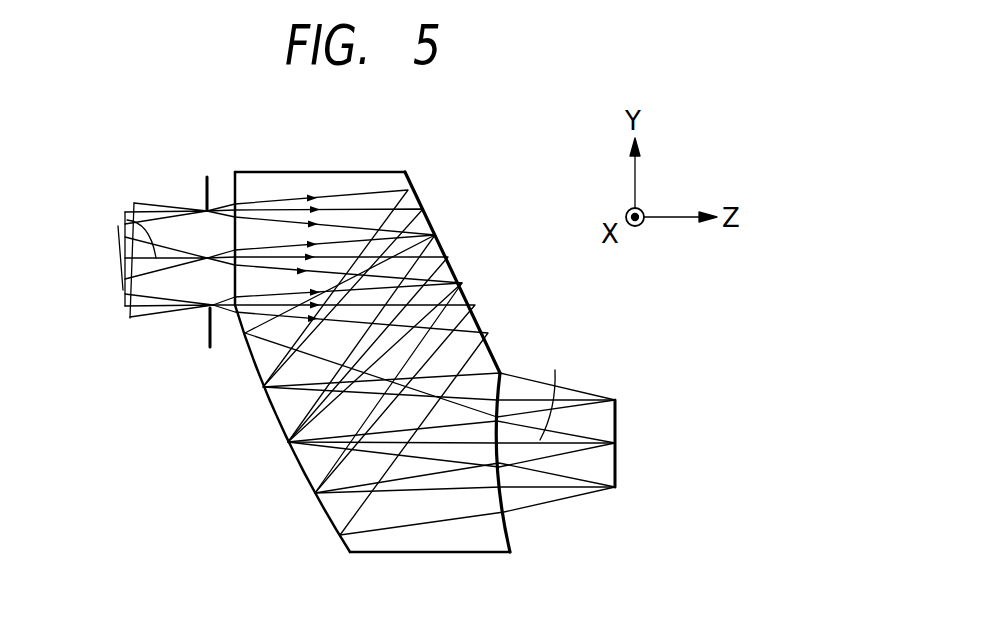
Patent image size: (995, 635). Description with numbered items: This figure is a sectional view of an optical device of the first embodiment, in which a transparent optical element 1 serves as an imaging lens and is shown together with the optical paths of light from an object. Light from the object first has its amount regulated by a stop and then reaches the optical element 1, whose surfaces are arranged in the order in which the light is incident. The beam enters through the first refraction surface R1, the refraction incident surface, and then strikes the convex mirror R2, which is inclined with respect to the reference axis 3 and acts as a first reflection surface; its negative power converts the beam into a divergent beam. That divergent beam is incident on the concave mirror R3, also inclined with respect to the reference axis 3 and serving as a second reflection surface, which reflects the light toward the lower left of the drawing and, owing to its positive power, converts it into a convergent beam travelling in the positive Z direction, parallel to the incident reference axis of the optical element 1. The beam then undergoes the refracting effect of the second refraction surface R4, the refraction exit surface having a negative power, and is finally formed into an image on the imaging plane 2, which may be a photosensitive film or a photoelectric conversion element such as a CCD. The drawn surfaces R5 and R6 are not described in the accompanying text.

The optical element 1 is at (407, 172).
The imaging plane 2 is at (618, 472).
The reference axis 3 is at (127, 220).
The first refraction surface R1 is at (204, 188).
The convex mirror R2 is at (236, 177).
The concave mirror R3 is at (448, 262).
The second refraction surface R4 is at (294, 458).
The exit refracting surface R5 is at (512, 541).
The image surface R6 is at (620, 395).